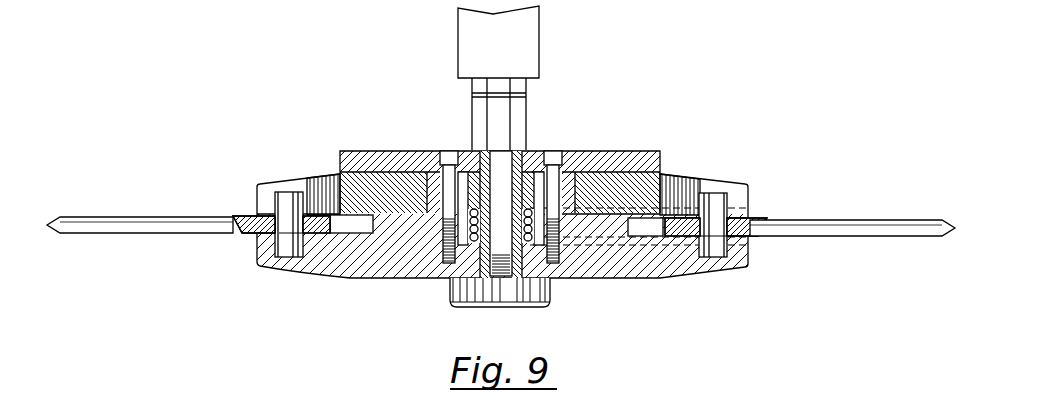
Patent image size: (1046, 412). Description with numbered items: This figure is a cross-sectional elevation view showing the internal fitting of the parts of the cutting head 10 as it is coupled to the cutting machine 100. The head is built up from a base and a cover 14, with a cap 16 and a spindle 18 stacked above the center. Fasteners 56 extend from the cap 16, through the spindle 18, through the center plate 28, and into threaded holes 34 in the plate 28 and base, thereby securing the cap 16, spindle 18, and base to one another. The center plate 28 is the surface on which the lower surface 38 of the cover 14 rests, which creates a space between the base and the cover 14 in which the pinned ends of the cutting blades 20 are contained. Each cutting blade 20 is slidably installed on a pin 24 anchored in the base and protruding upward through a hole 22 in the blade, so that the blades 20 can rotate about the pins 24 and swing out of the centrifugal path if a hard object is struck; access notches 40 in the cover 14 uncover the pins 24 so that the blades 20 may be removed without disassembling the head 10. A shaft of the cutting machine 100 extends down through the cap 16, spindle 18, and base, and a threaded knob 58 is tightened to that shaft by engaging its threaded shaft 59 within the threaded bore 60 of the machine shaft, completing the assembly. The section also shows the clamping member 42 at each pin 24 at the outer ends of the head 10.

The cutting head 10 is at (737, 132).
The cover 14 is at (342, 176).
The cap 16 is at (385, 160).
The spindle 18 is at (568, 185).
The cutting blades 20 is at (160, 222).
The holes 22 is at (273, 231).
The pins 24 is at (285, 246).
The center plate 28 is at (610, 216).
The threaded holes 34 is at (427, 269).
The lower surface 38 is at (663, 224).
The access notches 40 is at (309, 183).
The clamp nut 42 is at (278, 194).
The fasteners 56 is at (447, 158).
The threaded knob 58 is at (537, 296).
The threaded shaft 59 is at (503, 272).
The threaded bore 60 is at (497, 177).
The cutting machine 100 is at (537, 13).